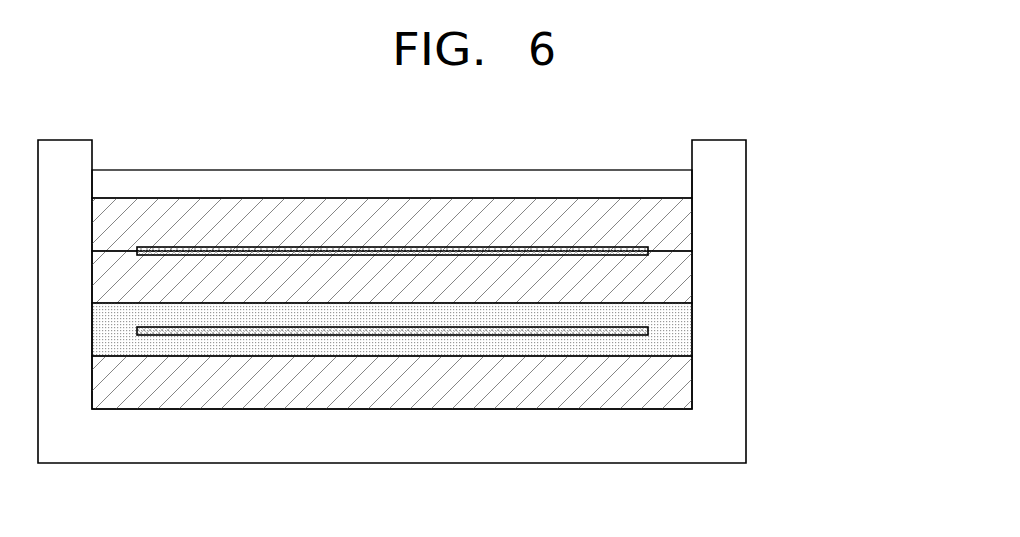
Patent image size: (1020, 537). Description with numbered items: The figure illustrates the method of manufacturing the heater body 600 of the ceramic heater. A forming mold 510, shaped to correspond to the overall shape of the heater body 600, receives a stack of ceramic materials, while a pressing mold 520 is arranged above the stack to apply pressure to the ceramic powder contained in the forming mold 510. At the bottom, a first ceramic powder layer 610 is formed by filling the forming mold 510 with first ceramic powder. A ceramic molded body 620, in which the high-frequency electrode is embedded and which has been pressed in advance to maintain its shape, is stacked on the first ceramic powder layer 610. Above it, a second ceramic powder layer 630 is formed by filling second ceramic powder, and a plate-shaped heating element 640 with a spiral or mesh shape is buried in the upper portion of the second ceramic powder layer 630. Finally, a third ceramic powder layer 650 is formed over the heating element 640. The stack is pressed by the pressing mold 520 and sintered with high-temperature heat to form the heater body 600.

The forming mold 510 is at (64, 140).
The pressing mold 520 is at (345, 181).
The heater body 600 is at (820, 223).
The first ceramic powder layer 610 is at (685, 388).
The ceramic molded body 620 is at (685, 332).
The second ceramic powder layer 630 is at (685, 280).
The heating element 640 is at (234, 247).
The third ceramic powder layer 650 is at (685, 223).